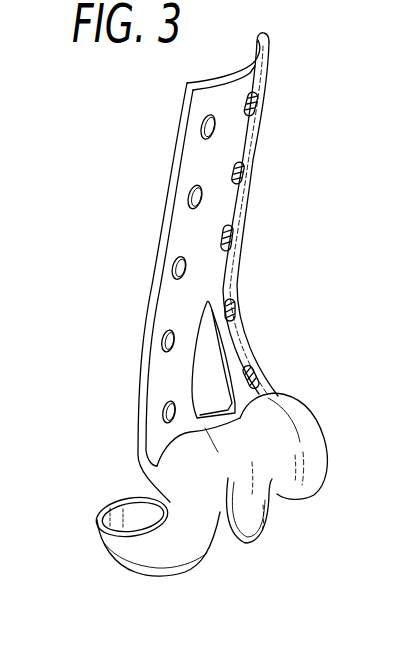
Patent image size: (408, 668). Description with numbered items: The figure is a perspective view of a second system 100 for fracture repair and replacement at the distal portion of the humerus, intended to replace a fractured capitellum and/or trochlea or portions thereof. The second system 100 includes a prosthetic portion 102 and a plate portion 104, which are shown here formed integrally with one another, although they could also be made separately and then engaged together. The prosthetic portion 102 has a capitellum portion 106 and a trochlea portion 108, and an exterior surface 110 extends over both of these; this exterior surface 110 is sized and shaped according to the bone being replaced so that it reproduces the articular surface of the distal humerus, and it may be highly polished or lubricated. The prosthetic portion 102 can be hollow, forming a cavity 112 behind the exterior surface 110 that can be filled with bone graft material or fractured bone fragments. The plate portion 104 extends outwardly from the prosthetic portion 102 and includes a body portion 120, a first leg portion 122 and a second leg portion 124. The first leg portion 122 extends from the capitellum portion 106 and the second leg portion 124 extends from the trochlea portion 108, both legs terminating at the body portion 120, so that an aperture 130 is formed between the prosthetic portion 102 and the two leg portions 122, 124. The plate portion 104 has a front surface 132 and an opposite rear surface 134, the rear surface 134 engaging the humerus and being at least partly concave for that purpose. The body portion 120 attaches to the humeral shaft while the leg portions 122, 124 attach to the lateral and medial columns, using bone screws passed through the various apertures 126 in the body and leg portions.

The second system 100 is at (147, 160).
The prosthetic portion 102 is at (153, 557).
The plate portion 104 is at (240, 257).
The capitellum portion 106 is at (196, 555).
The trochlea portion 108 is at (257, 488).
The exterior surface 110 is at (265, 438).
The cavity 112 is at (133, 521).
The body portion 120 is at (235, 135).
The first leg portion 122 is at (160, 416).
The second leg portion 124 is at (235, 338).
The apertures 126 is at (167, 277).
The aperture 130 is at (222, 360).
The front surface 132 is at (163, 376).
The rear surface 134 is at (160, 223).